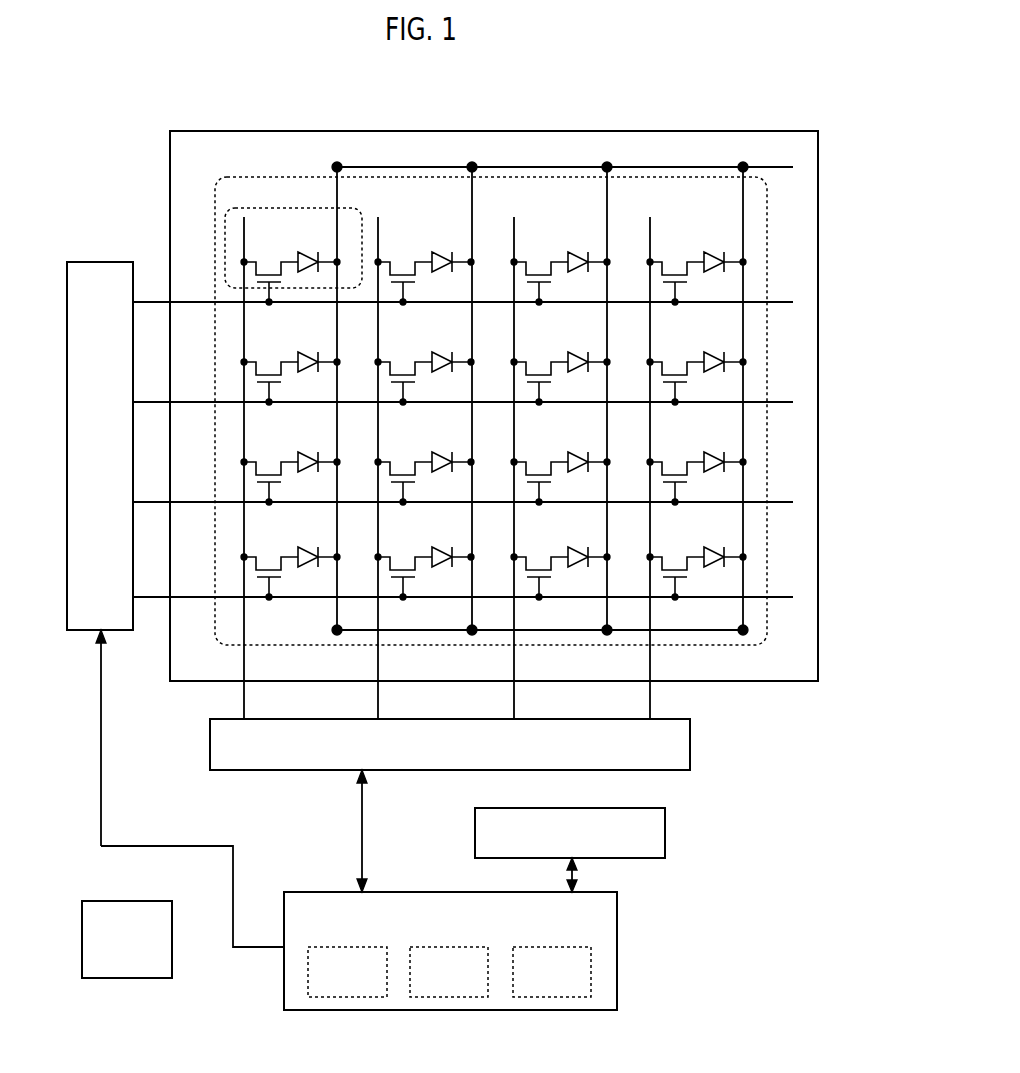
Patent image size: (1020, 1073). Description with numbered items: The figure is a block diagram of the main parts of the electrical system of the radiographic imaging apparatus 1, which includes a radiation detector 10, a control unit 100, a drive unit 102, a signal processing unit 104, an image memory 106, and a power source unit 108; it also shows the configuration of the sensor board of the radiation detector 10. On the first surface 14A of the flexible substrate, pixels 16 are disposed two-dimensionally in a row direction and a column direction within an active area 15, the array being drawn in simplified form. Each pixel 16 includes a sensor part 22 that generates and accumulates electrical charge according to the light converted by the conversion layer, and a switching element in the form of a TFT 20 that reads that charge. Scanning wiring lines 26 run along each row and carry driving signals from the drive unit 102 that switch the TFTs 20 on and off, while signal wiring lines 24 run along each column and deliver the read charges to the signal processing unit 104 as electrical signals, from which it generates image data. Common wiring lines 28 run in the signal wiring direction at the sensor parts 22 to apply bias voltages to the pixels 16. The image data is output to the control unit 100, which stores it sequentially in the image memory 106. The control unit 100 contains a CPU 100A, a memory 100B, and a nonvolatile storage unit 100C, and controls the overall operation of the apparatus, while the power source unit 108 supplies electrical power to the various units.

The radiographic imaging apparatus 1 is at (805, 1065).
The radiation detector 10 is at (685, 131).
The first surface 14A is at (767, 143).
The active area 15 is at (215, 221).
The pixel 16 is at (225, 258).
The switching element (TFT) 20 is at (279, 285).
The sensor part 22 is at (300, 257).
The signal wiring line 24 is at (246, 656).
The scanning wiring line 26 is at (775, 298).
The common wiring line 28 is at (339, 189).
The control unit 100 is at (478, 951).
The central processing unit (CPU) 100A is at (346, 947).
The memory 100B is at (458, 947).
The storage unit 100C is at (555, 947).
The drive unit 102 is at (97, 262).
The signal processing unit 104 is at (692, 750).
The image memory 106 is at (667, 822).
The power source unit 108 is at (130, 978).